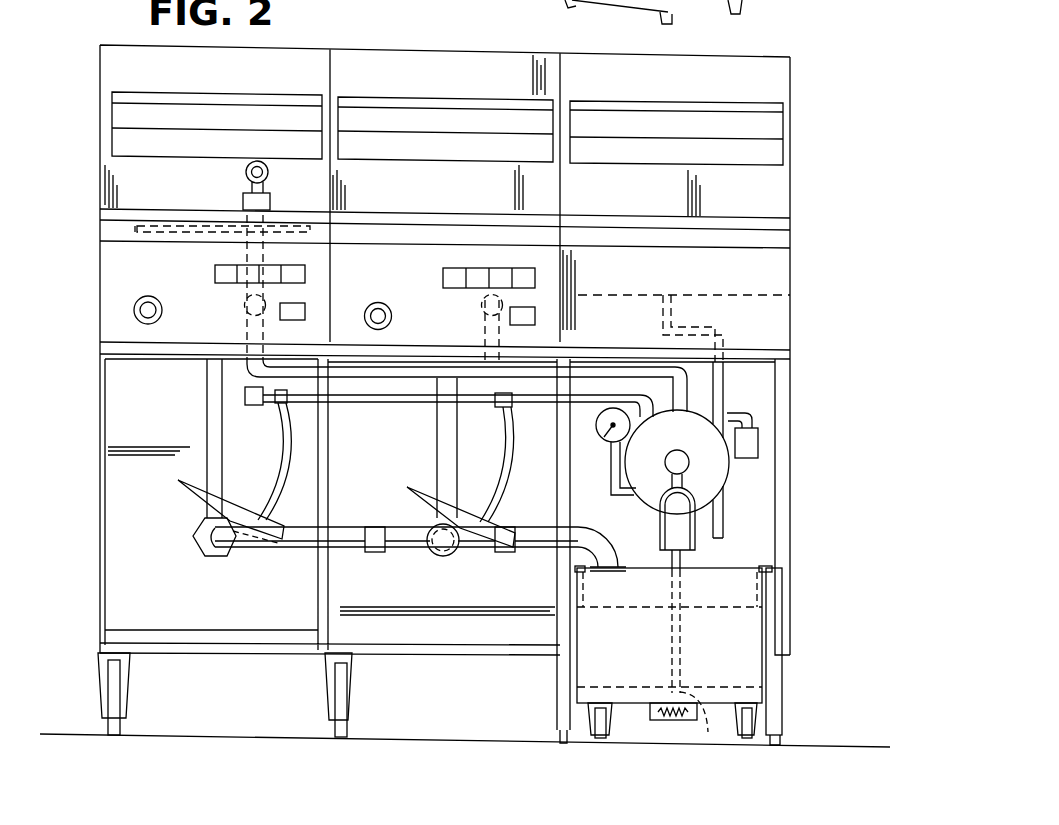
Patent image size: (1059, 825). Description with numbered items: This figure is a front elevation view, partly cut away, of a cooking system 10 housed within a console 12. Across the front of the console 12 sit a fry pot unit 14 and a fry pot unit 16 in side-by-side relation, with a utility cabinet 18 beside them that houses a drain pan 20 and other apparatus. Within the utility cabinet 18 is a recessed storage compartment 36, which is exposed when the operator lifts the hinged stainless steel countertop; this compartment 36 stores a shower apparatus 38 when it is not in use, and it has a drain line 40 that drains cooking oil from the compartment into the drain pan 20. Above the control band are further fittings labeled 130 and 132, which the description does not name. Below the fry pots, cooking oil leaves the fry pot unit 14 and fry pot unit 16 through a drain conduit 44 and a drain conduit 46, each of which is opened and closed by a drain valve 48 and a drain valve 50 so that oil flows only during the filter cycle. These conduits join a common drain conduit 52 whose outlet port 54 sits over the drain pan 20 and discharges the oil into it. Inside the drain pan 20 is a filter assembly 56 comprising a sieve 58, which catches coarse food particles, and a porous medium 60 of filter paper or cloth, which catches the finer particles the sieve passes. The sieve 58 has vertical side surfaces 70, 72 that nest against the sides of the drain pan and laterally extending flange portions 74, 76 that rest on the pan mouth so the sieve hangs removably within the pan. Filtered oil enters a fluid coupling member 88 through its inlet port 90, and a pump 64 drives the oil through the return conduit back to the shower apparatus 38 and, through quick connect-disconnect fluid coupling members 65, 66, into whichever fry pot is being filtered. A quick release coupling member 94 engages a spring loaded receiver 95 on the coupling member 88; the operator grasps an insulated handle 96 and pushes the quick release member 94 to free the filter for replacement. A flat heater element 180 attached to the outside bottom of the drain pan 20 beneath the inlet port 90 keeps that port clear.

The cooking system 10 is at (80, 38).
The console 12 is at (782, 55).
The fry pot unit 14 is at (117, 258).
The fry pot unit 16 is at (383, 253).
The utility cabinet 18 is at (611, 213).
The drain pan 20 is at (748, 651).
The recessed storage compartment 36 is at (755, 295).
The shower apparatus 38 is at (138, 225).
The drain line 40 is at (724, 336).
The drain conduit 44 is at (210, 408).
The drain conduit 46 is at (437, 428).
The drain valve 48 is at (193, 540).
The drain valve 50 is at (443, 556).
The common drain conduit 52 is at (295, 541).
The outlet port 54 is at (628, 568).
The filter assembly 56 is at (646, 663).
The sieve 58 is at (722, 613).
The porous medium 60 is at (702, 690).
The pump 64 is at (722, 467).
The quick connect-disconnect fluid coupling member 65 is at (245, 302).
The quick connect-disconnect fluid coupling member 66 is at (482, 302).
The vertical side surface 70 is at (587, 593).
The vertical side surface 72 is at (757, 588).
The flange portion 74 is at (575, 565).
The flange portion 76 is at (772, 567).
The fluid coupling member 88 is at (695, 487).
The inlet port 90 is at (708, 719).
The quick release coupling member 94 is at (675, 458).
The spring loaded receiver 95 is at (655, 487).
The insulated handle 96 is at (670, 520).
The hook 130 is at (268, 175).
The hook mounting bracket 132 is at (248, 190).
The heater element 180 is at (668, 716).